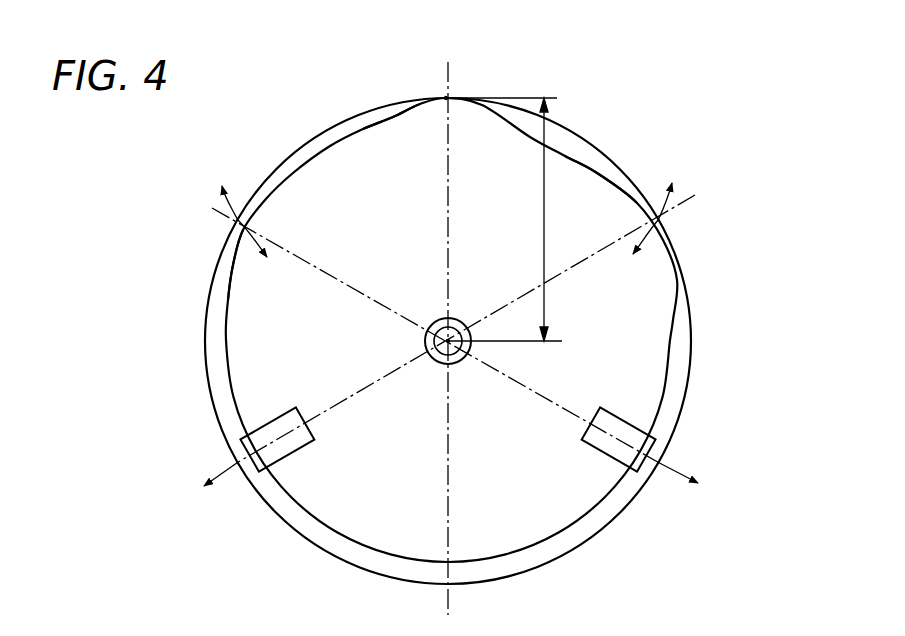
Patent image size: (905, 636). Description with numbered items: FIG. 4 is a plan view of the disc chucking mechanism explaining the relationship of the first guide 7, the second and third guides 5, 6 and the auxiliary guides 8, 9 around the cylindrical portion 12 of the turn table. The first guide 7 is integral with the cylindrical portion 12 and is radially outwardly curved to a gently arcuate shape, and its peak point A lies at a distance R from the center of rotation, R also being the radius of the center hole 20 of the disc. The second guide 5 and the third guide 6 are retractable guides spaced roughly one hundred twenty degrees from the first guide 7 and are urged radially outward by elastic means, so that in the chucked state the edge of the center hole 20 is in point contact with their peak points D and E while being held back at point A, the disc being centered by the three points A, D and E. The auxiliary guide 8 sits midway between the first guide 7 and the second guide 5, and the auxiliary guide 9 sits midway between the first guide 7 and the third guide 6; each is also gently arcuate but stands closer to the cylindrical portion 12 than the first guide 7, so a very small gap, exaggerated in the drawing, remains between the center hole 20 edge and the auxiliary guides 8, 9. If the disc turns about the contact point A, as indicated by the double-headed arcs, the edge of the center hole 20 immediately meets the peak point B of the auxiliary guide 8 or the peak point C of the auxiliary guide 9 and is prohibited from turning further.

The second guide 5 is at (250, 471).
The third guide 6 is at (655, 470).
The first guide 7 is at (405, 117).
The auxiliary guide 8 is at (237, 260).
The auxiliary guide 9 is at (610, 185).
The cylindrical portion 12 is at (672, 352).
The center hole 20 is at (683, 277).
The peak point of first guide A is at (452, 97).
The peak point of auxiliary guide B is at (238, 220).
The peak point of another auxiliary guide C is at (658, 220).
The peak point of second guide D is at (235, 463).
The peak point of third guide E is at (662, 462).
The radius R is at (531, 219).